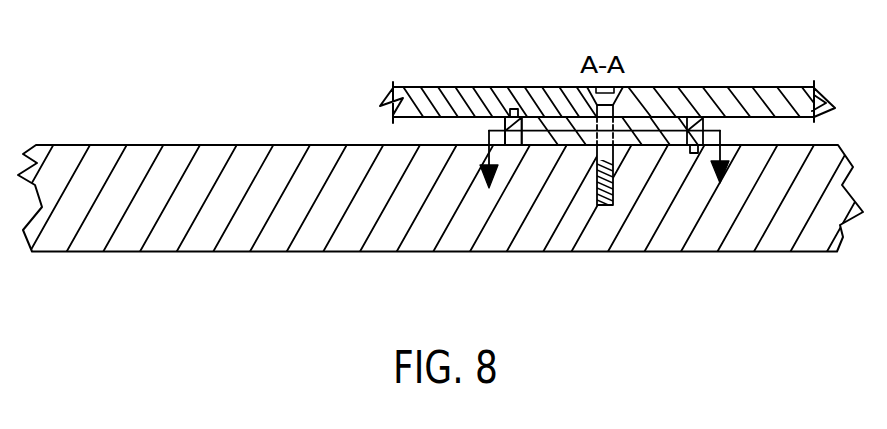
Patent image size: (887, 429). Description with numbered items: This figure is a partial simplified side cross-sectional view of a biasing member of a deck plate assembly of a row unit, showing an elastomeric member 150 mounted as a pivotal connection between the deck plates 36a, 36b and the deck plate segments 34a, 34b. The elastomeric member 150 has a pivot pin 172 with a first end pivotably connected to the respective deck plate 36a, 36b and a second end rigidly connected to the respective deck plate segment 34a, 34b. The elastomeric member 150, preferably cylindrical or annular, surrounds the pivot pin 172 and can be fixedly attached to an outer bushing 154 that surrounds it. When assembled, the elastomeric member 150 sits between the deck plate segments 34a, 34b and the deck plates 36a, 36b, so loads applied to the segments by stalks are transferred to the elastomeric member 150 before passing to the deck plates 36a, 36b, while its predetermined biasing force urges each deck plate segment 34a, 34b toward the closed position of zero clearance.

The first deck plate segment 34a is at (606, 64).
The second deck plate segment 34b is at (448, 101).
The deck plate 36a is at (443, 238).
The deck plate 36b is at (162, 228).
The elastomeric member 150 is at (666, 121).
The outer bushing 154 is at (522, 150).
The pivot pin 172 is at (603, 205).